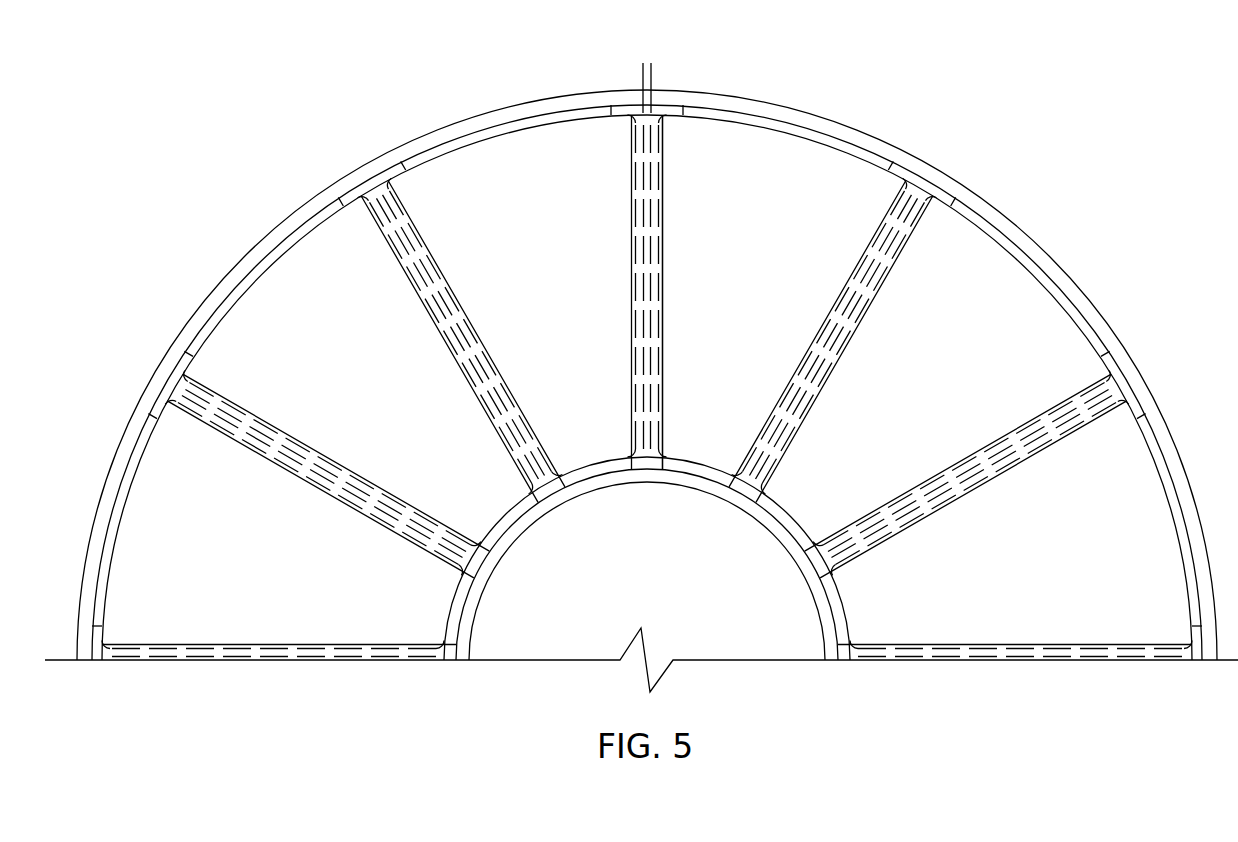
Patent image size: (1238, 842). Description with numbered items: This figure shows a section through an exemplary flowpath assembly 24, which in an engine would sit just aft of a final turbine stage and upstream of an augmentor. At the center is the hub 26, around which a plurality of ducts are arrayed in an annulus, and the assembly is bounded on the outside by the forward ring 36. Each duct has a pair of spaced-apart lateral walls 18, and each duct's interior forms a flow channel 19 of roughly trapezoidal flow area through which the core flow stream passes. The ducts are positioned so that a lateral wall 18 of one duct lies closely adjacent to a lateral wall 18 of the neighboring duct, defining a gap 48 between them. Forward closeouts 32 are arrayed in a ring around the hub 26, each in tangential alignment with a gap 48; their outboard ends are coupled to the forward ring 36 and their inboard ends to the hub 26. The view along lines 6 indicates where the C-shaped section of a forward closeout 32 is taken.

The flowpath assembly 24 is at (647, 361).
The forward ring 36 is at (777, 113).
The hub 26 is at (673, 482).
The lateral walls 18 is at (643, 340).
The forward closeouts 32 is at (662, 380).
The gap 48 is at (705, 75).
The section line 6- 6 is at (563, 215).
The flow channel 19 is at (566, 283).